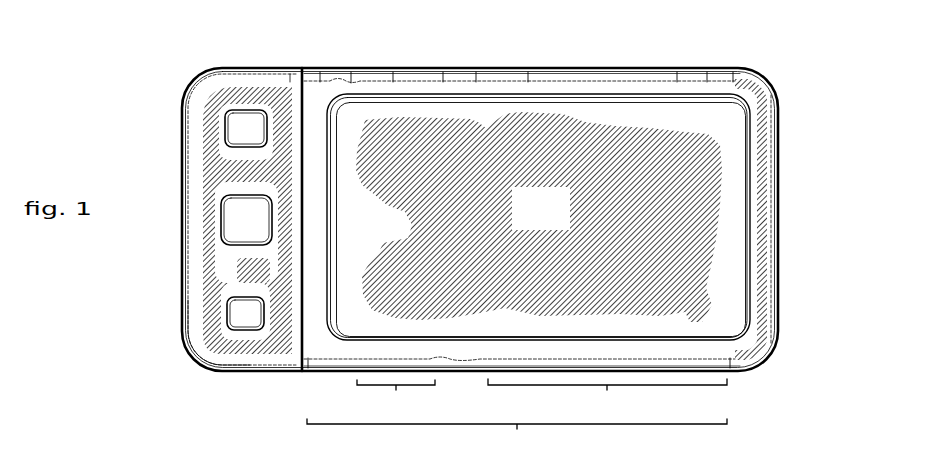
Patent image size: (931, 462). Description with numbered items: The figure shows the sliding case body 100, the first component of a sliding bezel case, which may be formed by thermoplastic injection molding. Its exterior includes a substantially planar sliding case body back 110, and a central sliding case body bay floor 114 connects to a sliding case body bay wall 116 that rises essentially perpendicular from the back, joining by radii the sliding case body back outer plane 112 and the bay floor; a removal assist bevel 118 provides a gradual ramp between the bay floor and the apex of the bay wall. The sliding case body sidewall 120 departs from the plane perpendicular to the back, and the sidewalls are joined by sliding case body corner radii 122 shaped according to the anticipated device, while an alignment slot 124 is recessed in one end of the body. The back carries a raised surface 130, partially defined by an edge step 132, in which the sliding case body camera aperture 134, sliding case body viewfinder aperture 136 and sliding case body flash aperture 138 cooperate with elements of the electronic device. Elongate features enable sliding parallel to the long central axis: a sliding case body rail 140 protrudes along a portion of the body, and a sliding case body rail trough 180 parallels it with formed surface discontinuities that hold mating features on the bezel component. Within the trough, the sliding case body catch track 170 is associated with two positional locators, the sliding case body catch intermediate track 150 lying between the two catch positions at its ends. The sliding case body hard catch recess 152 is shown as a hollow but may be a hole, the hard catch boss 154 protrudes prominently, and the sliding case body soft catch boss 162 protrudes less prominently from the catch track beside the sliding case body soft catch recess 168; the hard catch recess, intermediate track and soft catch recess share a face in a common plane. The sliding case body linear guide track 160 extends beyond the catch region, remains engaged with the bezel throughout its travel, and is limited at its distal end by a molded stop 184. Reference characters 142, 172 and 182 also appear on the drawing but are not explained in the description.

The sliding case body 100 is at (196, 81).
The sliding case body back 110 is at (762, 100).
The sliding case body back outer plane 112 is at (588, 88).
The sliding case body bay floor 114 is at (525, 215).
The sliding case body bay wall 116 is at (573, 97).
The removal assist bevel 118 is at (339, 241).
The sliding case body sidewall 120 is at (183, 124).
The sliding case body corner radii 122 is at (196, 360).
The alignment slot 124 is at (780, 192).
The raised surface 130 is at (290, 82).
The edge step 132 is at (300, 367).
The sliding case body camera aperture 134 is at (224, 222).
The sliding case body viewfinder aperture 136 is at (228, 128).
The sliding case body flash aperture 138 is at (229, 311).
The sliding case body rail 140 is at (497, 82).
The seam segment 142 is at (528, 82).
The sliding case body catch intermediate track 150 is at (396, 399).
The sliding case body hard catch recess 152 is at (320, 82).
The hard catch boss 154 is at (351, 83).
The sliding case body linear guide track 160 is at (393, 82).
The sliding case body soft catch boss 162 is at (443, 82).
The sliding case body soft catch recess 168 is at (476, 82).
The sliding case body catch track 170 is at (655, 28).
The end portion 172 is at (733, 76).
The sliding case body rail trough 180 is at (517, 436).
The first end 182 is at (308, 368).
The molded stop 184 is at (730, 367).